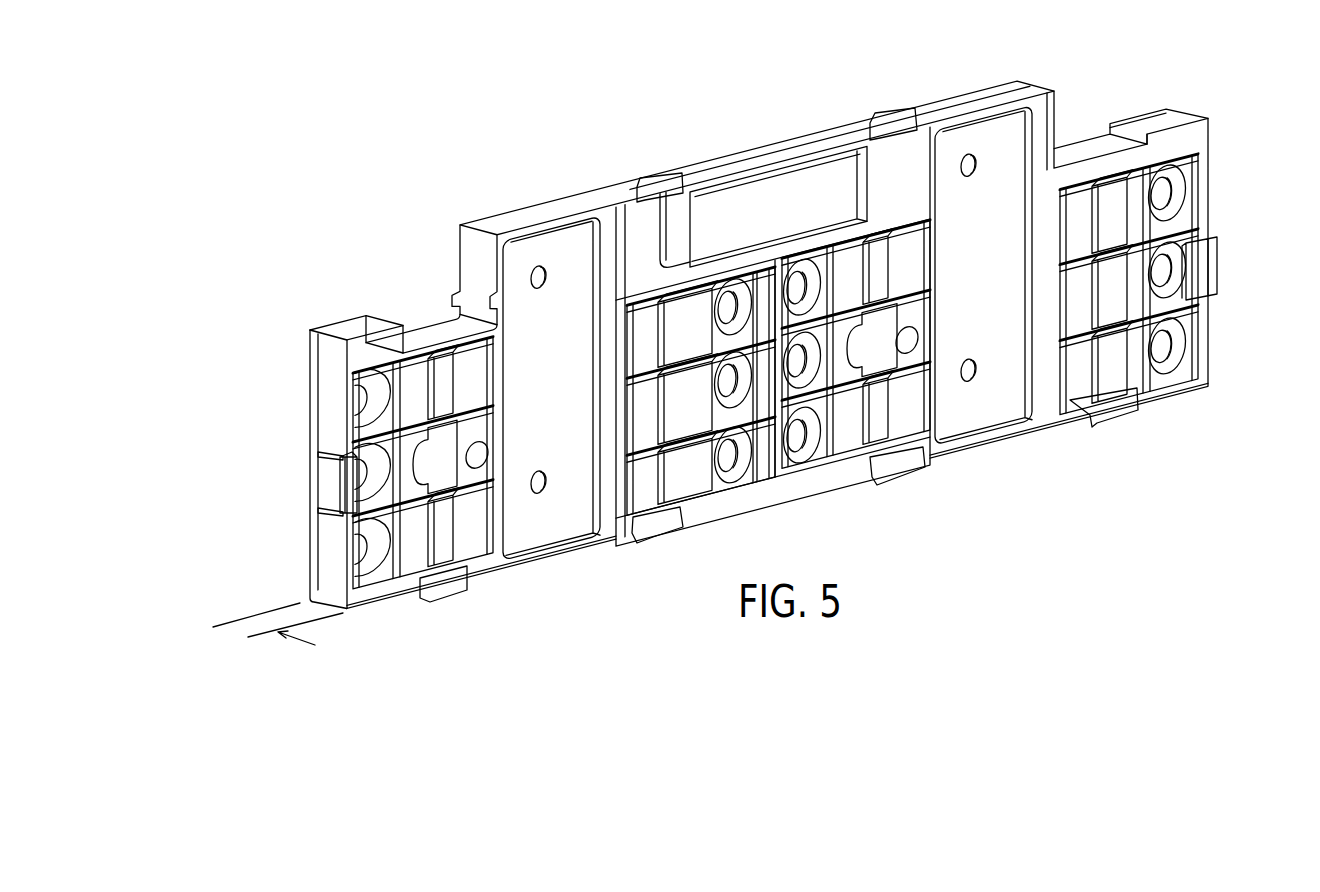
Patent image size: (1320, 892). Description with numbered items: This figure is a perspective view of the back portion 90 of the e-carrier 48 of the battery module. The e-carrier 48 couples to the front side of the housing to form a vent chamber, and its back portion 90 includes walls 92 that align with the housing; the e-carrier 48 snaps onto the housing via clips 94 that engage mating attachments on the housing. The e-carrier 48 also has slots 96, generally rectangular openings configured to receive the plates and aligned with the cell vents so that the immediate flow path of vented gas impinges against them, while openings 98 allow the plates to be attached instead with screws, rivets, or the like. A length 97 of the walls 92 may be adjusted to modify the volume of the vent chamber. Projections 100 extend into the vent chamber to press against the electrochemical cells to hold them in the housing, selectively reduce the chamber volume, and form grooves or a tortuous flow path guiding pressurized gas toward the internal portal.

The e-carrier 48 is at (195, 683).
The back portion 90 is at (427, 684).
The walls 92 is at (458, 260).
The clips 94 is at (660, 192).
The slots 96 is at (590, 536).
The length 97 is at (233, 619).
The openings 98 is at (545, 495).
The projections 100 is at (770, 200).